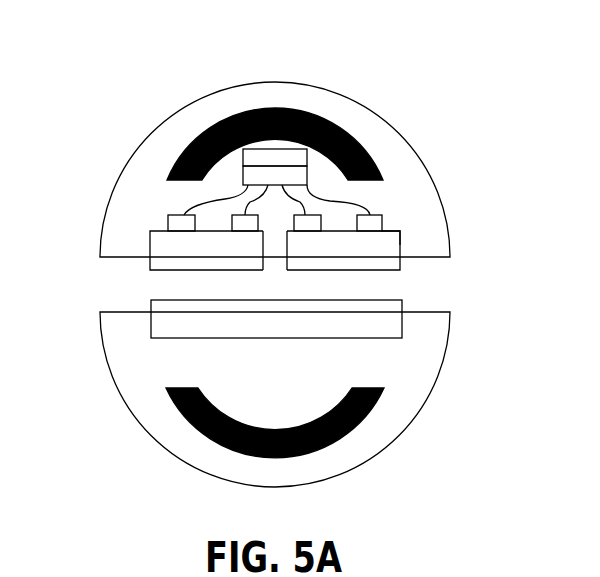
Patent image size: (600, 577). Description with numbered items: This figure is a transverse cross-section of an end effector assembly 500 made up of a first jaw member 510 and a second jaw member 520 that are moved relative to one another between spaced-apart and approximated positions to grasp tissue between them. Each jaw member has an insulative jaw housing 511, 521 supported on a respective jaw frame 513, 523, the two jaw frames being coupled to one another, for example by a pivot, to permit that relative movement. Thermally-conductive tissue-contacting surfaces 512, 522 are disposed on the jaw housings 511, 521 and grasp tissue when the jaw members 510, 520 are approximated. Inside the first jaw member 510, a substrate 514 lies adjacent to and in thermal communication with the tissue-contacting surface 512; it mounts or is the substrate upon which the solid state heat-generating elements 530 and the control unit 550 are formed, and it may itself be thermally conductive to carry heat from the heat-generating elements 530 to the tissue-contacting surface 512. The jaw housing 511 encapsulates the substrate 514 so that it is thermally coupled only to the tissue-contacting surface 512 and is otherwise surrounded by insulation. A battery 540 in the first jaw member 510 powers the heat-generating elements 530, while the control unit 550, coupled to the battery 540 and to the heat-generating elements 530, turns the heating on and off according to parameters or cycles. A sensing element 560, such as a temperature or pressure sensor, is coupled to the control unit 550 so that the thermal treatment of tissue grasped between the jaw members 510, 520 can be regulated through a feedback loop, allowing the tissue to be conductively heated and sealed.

The end effector assembly 500 is at (467, 50).
The first jaw member 510 is at (198, 88).
The jaw housing 511 is at (420, 150).
The tissue-contacting surface 512 is at (385, 270).
The jaw frame 513 is at (333, 123).
The substrate 514 is at (402, 237).
The second jaw member 520 is at (170, 462).
The jaw housing 521 is at (405, 407).
The tissue-contacting surface 522 is at (392, 305).
The jaw frame 523 is at (330, 445).
The solid state heat-generating elements 530 is at (247, 227).
The battery 540 is at (268, 155).
The control unit 550 is at (252, 175).
The sensing element 560 is at (272, 263).